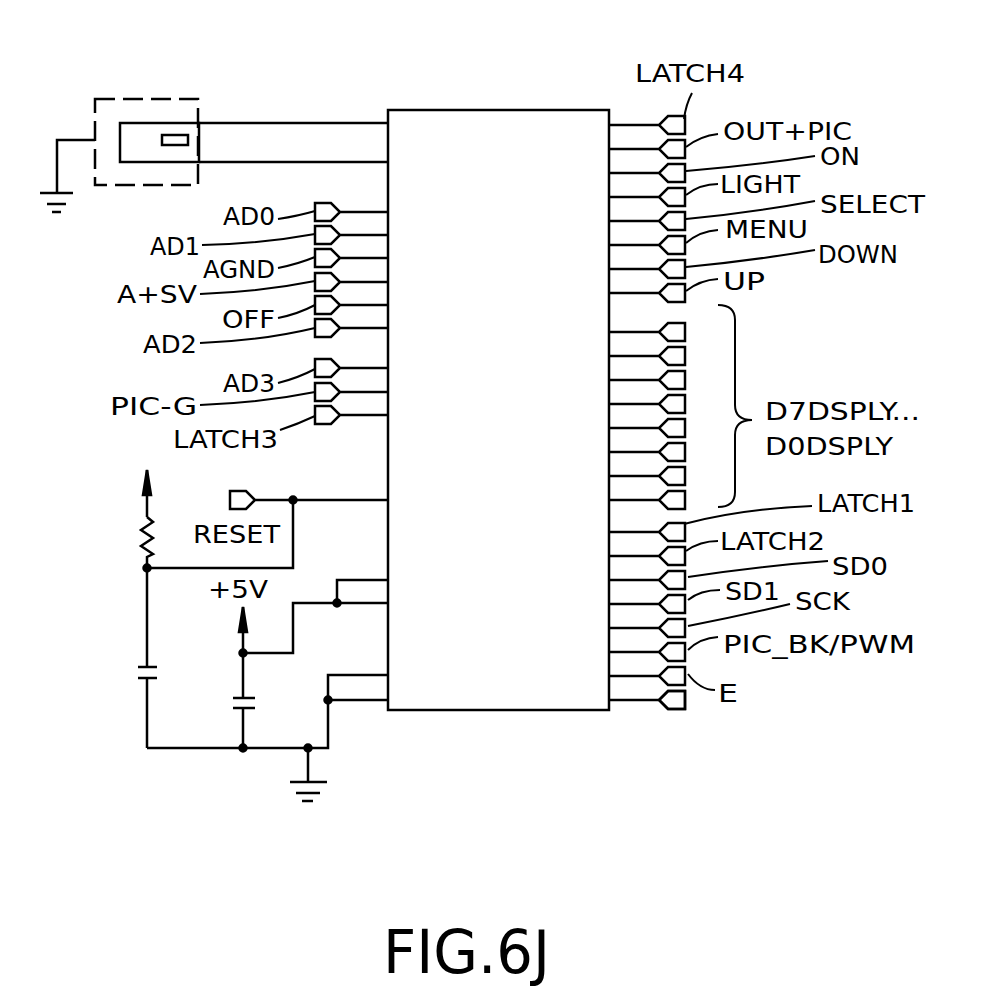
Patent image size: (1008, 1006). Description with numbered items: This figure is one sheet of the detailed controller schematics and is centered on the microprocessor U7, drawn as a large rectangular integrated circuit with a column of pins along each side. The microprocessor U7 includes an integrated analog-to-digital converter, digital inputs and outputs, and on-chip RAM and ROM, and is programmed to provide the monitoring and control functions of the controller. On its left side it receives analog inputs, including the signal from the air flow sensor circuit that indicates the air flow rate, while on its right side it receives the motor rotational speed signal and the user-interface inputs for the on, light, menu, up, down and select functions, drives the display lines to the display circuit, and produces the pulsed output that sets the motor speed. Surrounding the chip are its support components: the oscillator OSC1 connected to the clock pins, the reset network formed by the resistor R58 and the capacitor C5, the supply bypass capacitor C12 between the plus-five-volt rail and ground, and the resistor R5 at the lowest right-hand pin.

The microprocessor U7 is at (508, 130).
The oscillator OSC1 is at (170, 94).
The resistor R58 is at (114, 568).
The capacitor C5 is at (124, 705).
The capacitor C12 is at (216, 700).
The resistor R5 is at (676, 710).